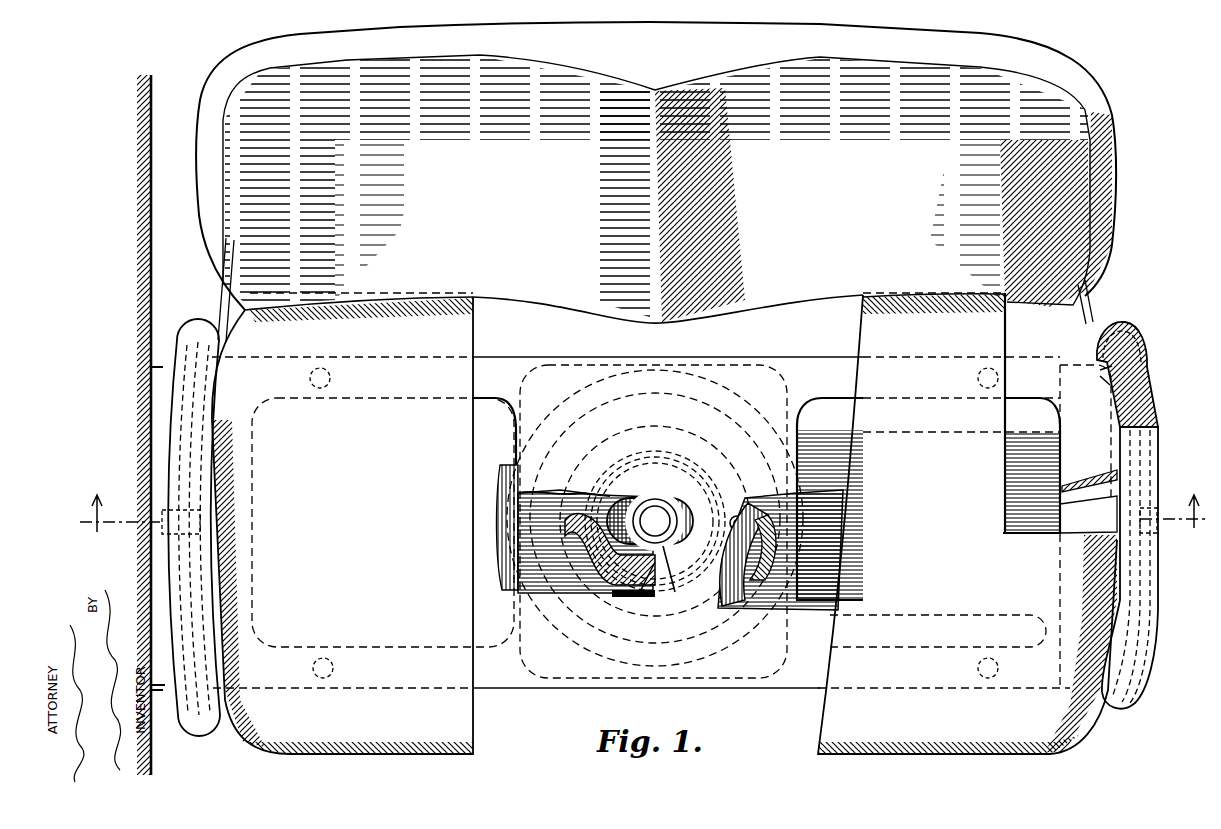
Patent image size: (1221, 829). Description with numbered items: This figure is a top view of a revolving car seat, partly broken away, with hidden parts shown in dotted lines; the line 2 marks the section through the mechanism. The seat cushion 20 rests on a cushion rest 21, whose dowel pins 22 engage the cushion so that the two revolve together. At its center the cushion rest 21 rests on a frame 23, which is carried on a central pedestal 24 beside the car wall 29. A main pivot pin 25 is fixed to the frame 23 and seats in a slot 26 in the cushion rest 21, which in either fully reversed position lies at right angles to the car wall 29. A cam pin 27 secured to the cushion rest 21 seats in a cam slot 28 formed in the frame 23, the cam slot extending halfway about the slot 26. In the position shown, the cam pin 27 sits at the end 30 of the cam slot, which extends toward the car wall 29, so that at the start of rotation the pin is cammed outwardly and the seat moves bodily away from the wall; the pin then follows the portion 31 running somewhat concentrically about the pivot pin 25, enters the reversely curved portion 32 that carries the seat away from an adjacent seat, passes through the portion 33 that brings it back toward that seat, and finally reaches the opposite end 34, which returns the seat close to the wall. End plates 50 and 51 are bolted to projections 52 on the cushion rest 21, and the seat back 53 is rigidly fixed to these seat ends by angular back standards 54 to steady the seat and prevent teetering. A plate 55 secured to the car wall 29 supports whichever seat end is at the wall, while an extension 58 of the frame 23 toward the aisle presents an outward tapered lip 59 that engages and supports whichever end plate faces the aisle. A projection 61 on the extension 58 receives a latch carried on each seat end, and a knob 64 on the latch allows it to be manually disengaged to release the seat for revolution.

The section line 2- 2 is at (642, 528).
The seat cushion 20 is at (475, 745).
The cushion rest 21 is at (552, 462).
The dowel pins 22 is at (320, 388).
The frame 23 is at (510, 535).
The central pedestal 24 is at (505, 556).
The main pivot pin 25 is at (660, 518).
The slot 26 is at (622, 505).
The cam pin 27 is at (738, 518).
The cam slot 28 is at (650, 596).
The car wall 29 is at (153, 288).
The end of the slot 30 is at (790, 518).
The portion of the slot 31 is at (805, 565).
The reversely curved portion 32 is at (672, 594).
The portion of the slot 33 is at (607, 581).
The opposite end of the slot 34 is at (595, 535).
The end plate 50 is at (1142, 468).
The end plate 51 is at (175, 462).
The projections 52 is at (1118, 390).
The seat back 53 is at (1035, 128).
The angular back standards 54 is at (226, 312).
The plate 55 is at (165, 692).
The extension 58 is at (1035, 492).
The tapered lip 59 is at (1095, 403).
The projection 61 is at (1088, 501).
The knob 64 is at (150, 513).